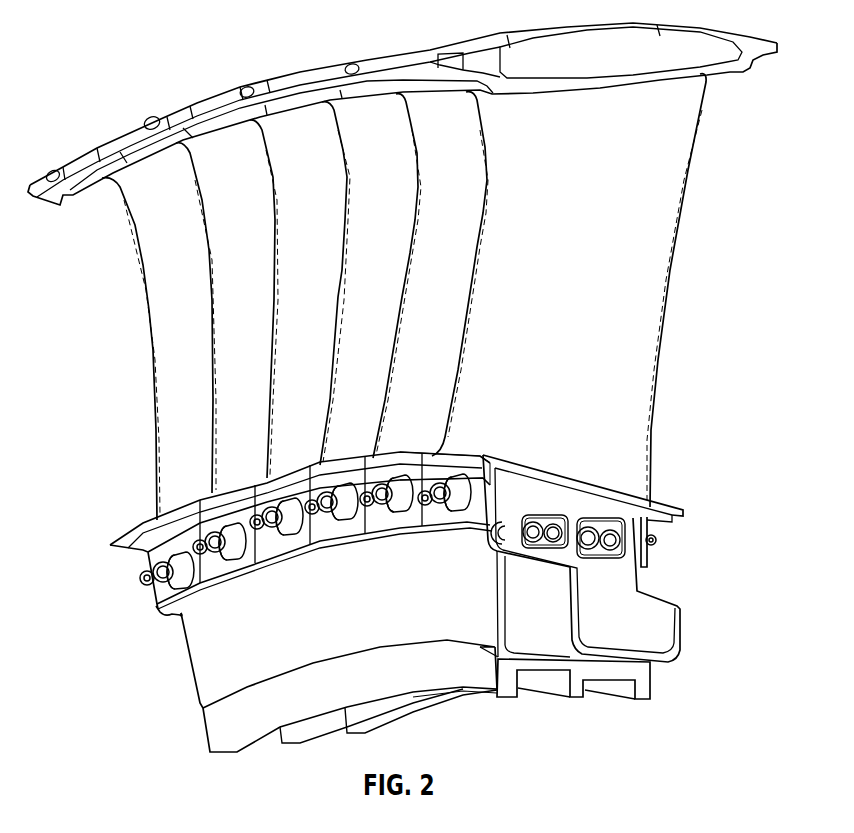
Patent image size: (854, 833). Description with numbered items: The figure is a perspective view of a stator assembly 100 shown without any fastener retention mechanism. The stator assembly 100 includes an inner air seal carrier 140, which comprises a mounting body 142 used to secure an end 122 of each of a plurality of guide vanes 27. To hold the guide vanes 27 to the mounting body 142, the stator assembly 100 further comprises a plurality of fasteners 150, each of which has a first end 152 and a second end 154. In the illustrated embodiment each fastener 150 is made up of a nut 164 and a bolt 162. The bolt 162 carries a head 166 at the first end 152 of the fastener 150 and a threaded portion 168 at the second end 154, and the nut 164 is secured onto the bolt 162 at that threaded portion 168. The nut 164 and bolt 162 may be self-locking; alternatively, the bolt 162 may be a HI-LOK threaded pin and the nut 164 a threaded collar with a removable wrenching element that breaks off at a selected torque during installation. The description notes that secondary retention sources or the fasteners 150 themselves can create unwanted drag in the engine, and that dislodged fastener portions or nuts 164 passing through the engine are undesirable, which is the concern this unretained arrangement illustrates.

The stator assembly 100 is at (402, 271).
The guide vanes 27 is at (653, 308).
The end of guide vane 122 is at (306, 506).
The nut 164 is at (483, 466).
The fasteners 150 is at (437, 537).
The bolt 162 is at (440, 510).
The threaded portion 168 is at (459, 514).
The first end 152 is at (613, 577).
The second end 154 is at (658, 532).
The head 166 is at (602, 553).
The mounting body 142 is at (177, 612).
The inner air seal carrier 140 is at (300, 679).